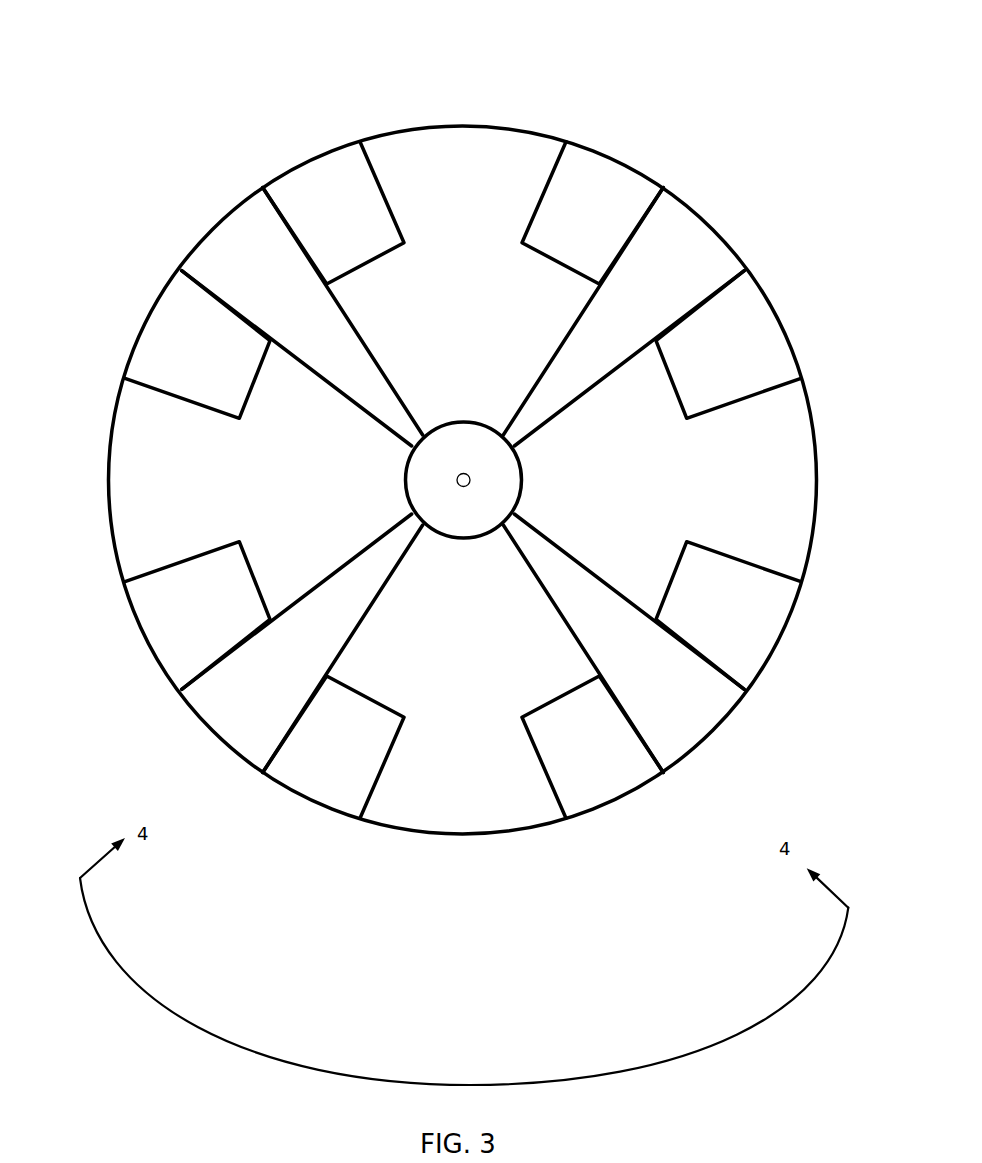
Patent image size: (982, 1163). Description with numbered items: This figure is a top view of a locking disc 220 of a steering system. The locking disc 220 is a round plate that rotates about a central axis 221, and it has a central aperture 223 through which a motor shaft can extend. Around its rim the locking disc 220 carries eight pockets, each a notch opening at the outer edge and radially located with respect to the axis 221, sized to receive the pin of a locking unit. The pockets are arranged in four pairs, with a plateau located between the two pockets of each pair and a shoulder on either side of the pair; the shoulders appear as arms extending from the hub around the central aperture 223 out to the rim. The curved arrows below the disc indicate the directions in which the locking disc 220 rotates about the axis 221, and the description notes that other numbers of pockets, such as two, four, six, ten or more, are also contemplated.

The locking disc 220 is at (196, 121).
The axis 221 is at (461, 481).
The central aperture 223 is at (468, 502).